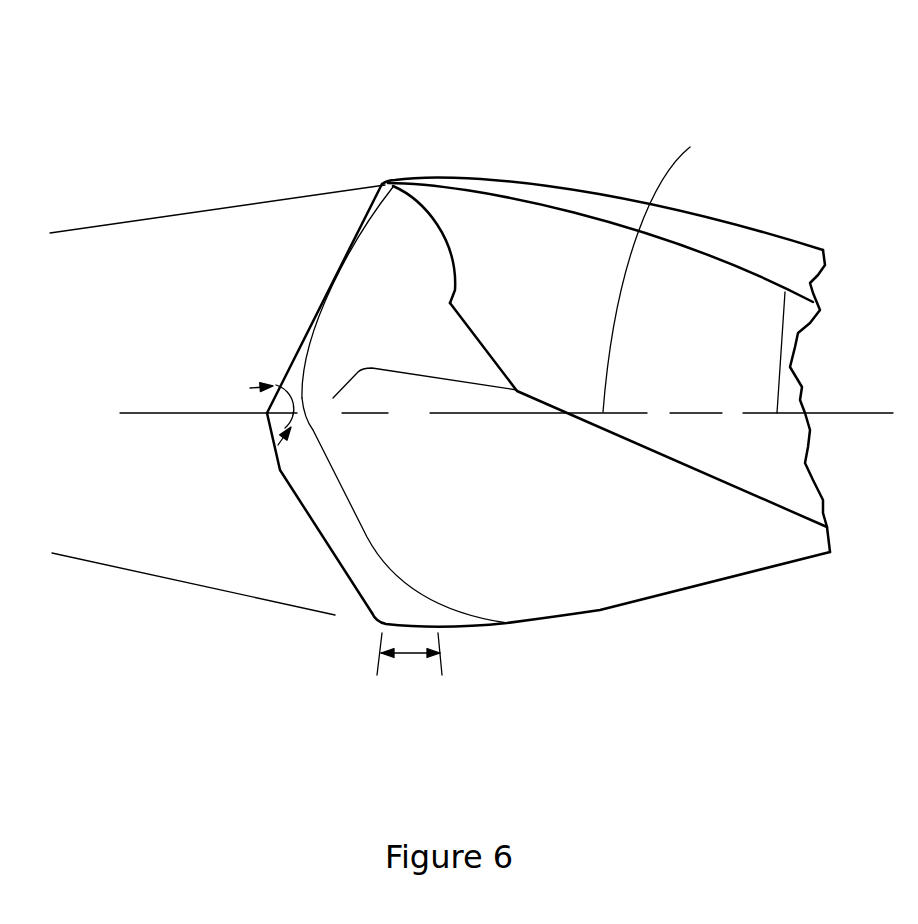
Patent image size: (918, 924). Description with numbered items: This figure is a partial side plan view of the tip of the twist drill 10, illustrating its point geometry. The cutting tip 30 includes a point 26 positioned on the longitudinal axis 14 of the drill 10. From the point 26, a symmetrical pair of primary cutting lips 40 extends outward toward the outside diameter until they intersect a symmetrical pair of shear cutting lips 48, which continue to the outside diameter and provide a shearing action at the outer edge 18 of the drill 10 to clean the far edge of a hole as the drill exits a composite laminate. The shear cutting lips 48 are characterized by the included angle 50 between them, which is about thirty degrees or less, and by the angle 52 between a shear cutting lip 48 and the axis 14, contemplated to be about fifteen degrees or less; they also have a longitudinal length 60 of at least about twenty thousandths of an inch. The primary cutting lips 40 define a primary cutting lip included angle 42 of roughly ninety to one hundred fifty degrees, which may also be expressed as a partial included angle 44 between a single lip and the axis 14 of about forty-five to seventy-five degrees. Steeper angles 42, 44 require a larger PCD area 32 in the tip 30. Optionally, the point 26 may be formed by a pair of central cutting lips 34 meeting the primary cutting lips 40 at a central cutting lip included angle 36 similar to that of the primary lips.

The twist drill 10 is at (575, 102).
The longitudinal axis 14 is at (670, 272).
The outer edge 18 is at (420, 177).
The point 26 is at (267, 413).
The cutting tip 30 is at (402, 150).
The PCD area 32 is at (372, 205).
The central cutting lips 34 is at (275, 385).
The central cutting lip included angle 36 is at (303, 366).
The primary cutting lips 40 is at (318, 302).
The primary cutting lip included angle 42 is at (335, 283).
The partial included angle 44 is at (350, 247).
The shear cutting lips 48 is at (397, 180).
The included angle 50 is at (80, 229).
The angle 52 is at (158, 218).
The longitudinal length 60 is at (408, 655).